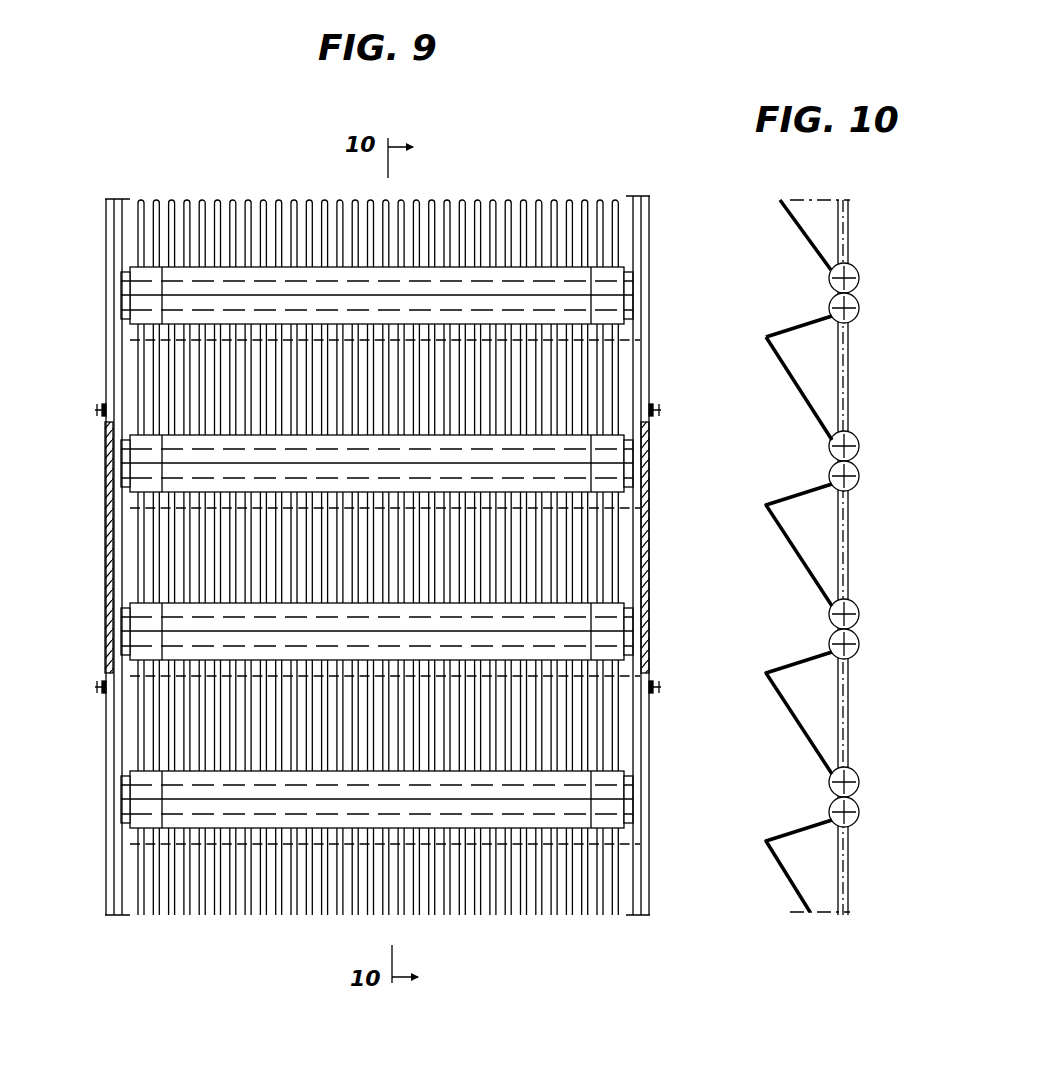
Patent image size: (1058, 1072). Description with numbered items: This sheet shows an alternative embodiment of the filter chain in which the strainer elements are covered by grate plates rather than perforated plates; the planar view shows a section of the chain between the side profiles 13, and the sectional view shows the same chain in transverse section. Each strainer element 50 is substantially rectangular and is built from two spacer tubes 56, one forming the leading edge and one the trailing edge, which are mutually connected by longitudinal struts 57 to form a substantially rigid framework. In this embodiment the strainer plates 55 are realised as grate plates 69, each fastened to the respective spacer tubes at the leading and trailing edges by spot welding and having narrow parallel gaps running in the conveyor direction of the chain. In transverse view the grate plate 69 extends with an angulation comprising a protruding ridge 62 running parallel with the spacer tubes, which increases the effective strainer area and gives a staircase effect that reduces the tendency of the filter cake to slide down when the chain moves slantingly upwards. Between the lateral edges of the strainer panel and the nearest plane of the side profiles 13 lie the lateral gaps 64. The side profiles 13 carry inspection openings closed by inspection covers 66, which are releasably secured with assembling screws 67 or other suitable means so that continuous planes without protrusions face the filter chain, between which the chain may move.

In FIG. 9, the side profile 13 is at (106, 259).
In FIG. 9, the strainer element 50 is at (277, 177).
In FIG. 10, the strainer plate 55 is at (783, 373).
In FIG. 10, the spacer tube 56 is at (857, 483).
In FIG. 10, the longitudinal strut 57 is at (850, 377).
In FIG. 10, the protruding ridge 62 is at (763, 337).
In FIG. 9, the lateral gap 64 is at (115, 193).
In FIG. 9, the inspection cover 66 is at (105, 575).
In FIG. 9, the assembling screw 67 is at (95, 410).
In FIG. 9, the grate plate 69 is at (223, 202).